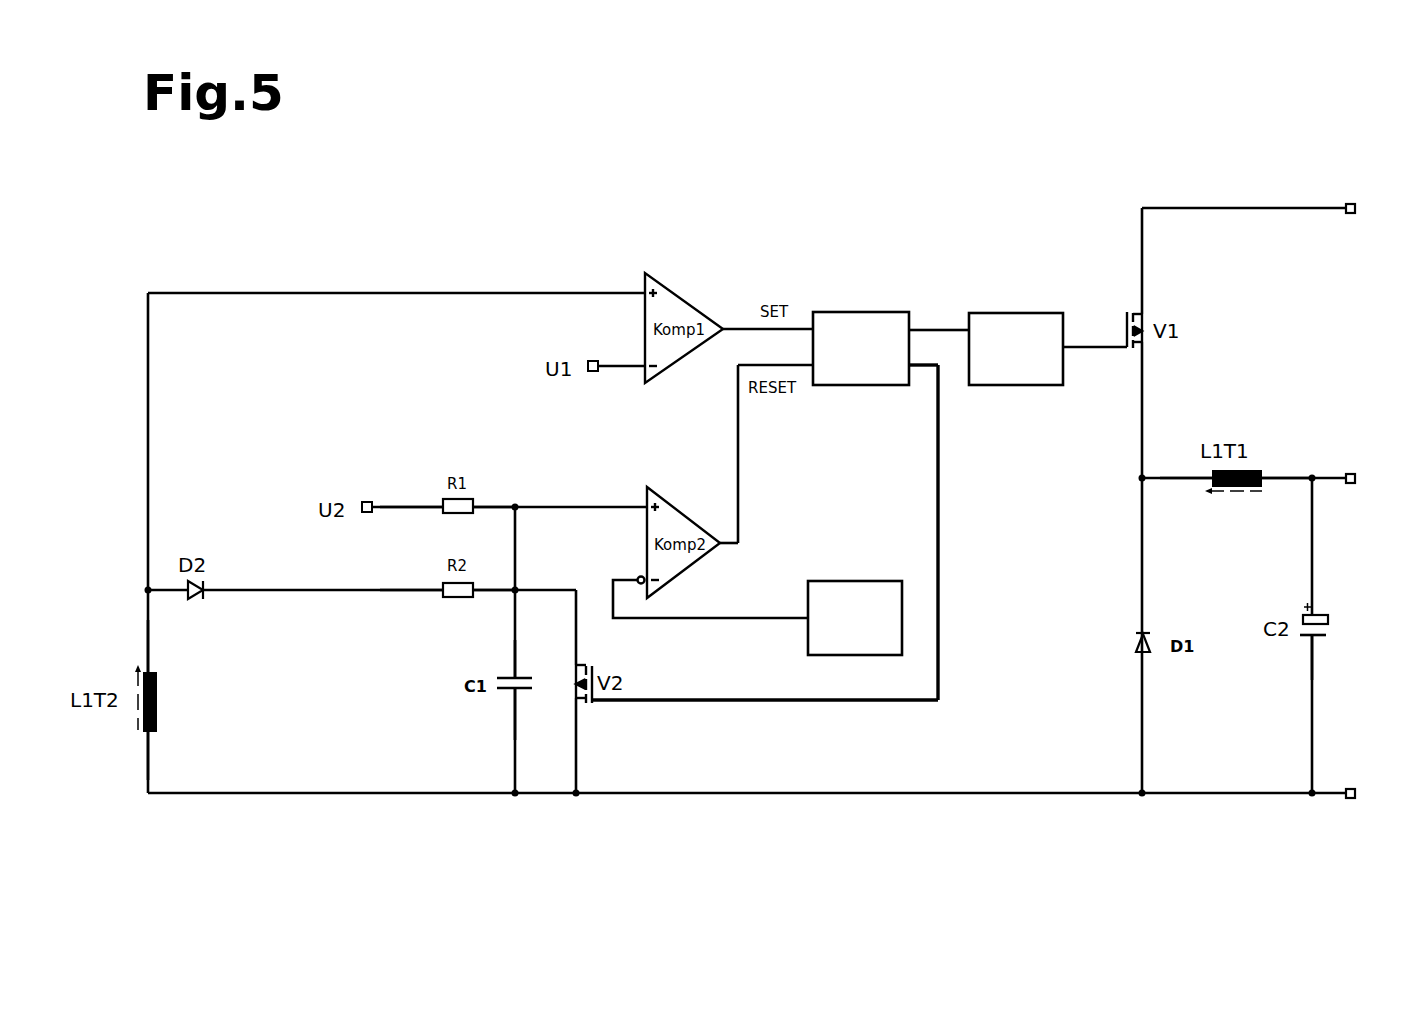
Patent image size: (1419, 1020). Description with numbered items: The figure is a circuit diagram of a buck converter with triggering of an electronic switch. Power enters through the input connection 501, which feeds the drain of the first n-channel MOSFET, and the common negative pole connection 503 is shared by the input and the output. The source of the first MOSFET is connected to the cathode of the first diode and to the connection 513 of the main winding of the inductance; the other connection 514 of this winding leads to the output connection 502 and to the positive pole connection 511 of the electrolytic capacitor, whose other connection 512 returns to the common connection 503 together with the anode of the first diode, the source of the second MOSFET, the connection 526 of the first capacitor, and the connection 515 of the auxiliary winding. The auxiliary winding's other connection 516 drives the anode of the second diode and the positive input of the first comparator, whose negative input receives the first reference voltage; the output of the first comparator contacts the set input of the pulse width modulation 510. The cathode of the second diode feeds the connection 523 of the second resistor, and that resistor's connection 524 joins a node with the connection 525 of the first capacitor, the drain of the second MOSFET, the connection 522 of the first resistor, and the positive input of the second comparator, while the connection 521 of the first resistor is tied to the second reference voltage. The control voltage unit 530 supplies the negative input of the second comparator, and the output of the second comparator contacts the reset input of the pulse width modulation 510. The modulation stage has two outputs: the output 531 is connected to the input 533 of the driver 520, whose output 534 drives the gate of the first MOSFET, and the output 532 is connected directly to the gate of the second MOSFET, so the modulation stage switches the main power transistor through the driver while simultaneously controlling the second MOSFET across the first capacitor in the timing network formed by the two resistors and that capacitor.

The input connection 501 is at (1374, 211).
The output connection 502 is at (1374, 481).
The common negative pole connection 503 is at (1374, 796).
The pulse width modulation 510 is at (861, 348).
The positive pole connection of capacitor C2 511 is at (1335, 610).
The connection of capacitor C2 512 is at (1334, 657).
The connection of main winding L1T1 513 is at (1186, 502).
The connection of main winding L1T1 514 is at (1282, 502).
The connection of auxiliary winding L1T2 515 is at (122, 756).
The connection of auxiliary winding L1T2 516 is at (122, 646).
The driver 520 is at (1016, 349).
The connection of resistor R1 521 is at (411, 492).
The connection of resistor R1 522 is at (496, 492).
The connection of resistor R2 523 is at (411, 574).
The connection of resistor R2 524 is at (487, 610).
The connection of capacitor C1 525 is at (497, 659).
The connection of capacitor C1 526 is at (497, 714).
The control voltage unit 530 is at (855, 618).
The output of pulse width modulation 531 is at (913, 326).
The output of pulse width modulation 532 is at (918, 372).
The input of driver 533 is at (960, 324).
The output of driver 534 is at (1072, 353).